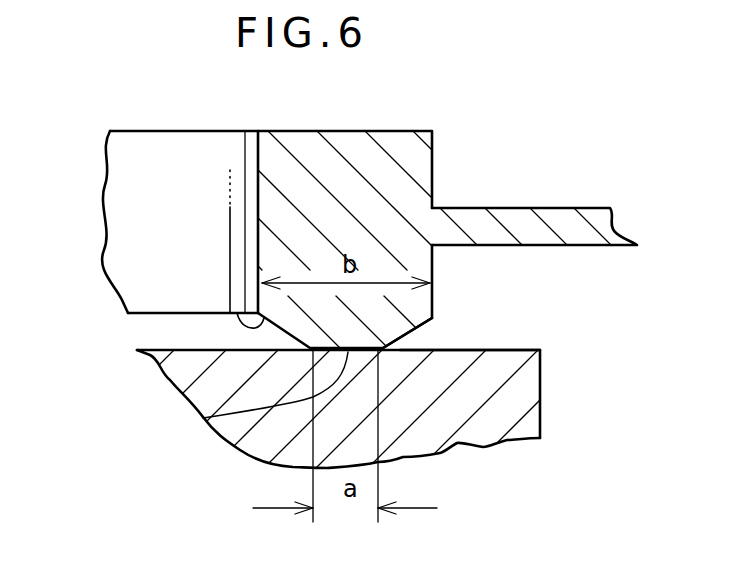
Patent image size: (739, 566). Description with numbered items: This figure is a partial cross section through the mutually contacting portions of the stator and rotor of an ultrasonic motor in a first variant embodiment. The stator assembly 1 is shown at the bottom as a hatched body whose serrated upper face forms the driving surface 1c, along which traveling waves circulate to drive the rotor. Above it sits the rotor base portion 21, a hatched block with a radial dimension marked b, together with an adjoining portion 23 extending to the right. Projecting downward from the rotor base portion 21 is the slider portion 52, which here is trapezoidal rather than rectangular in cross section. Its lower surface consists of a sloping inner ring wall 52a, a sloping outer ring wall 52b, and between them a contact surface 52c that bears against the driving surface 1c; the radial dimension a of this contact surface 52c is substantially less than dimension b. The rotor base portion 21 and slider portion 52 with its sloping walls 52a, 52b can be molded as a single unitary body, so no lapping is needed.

The stator assembly 1 is at (497, 383).
The driving surface 1c is at (503, 350).
The rotor base portion 21 is at (390, 131).
The arm portion 23 is at (517, 225).
The slider portion 52 is at (278, 327).
The sloping inner ring wall 52a is at (238, 313).
The sloping outer ring wall 52b is at (418, 341).
The contact surface 52c is at (203, 418).